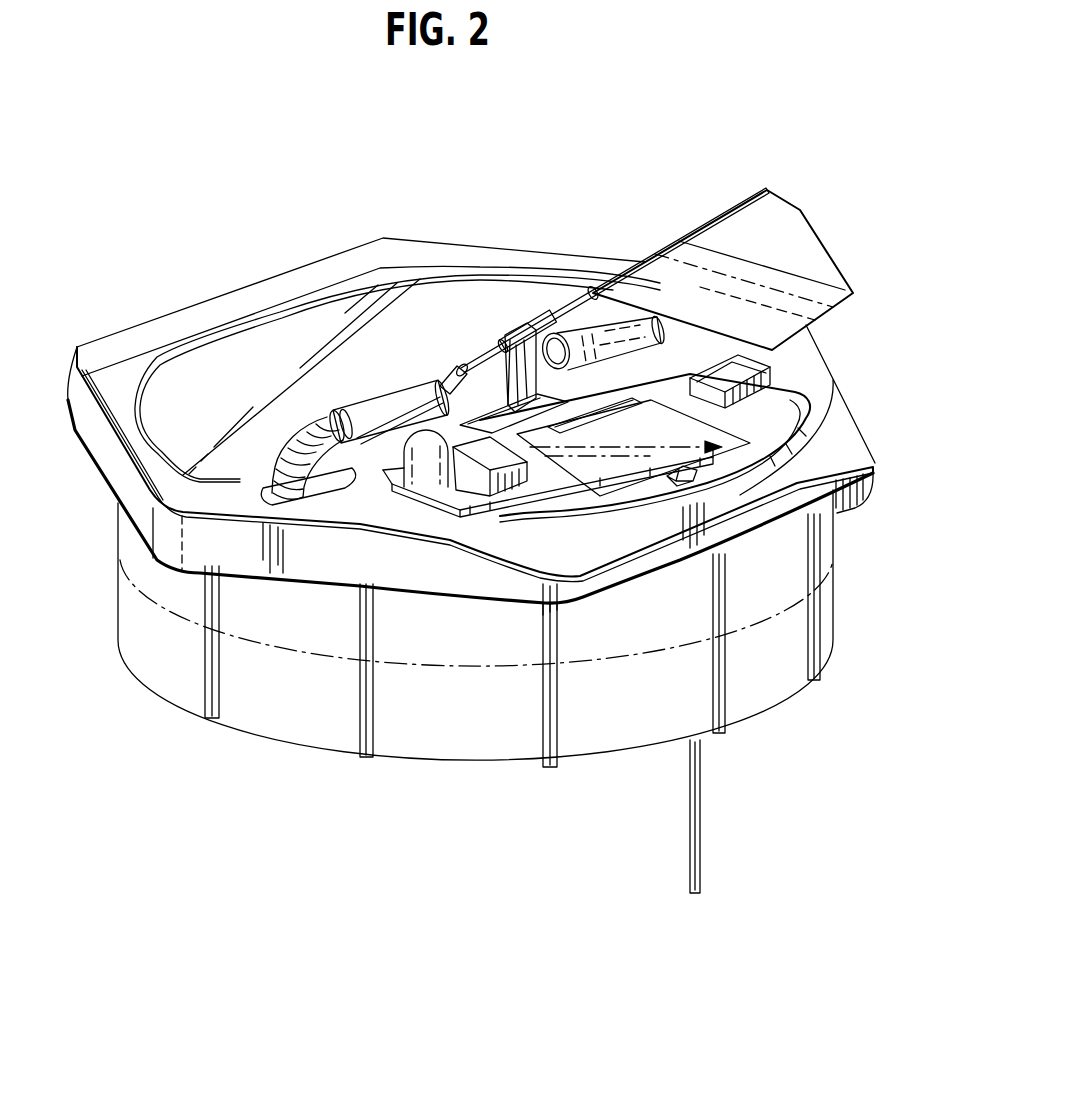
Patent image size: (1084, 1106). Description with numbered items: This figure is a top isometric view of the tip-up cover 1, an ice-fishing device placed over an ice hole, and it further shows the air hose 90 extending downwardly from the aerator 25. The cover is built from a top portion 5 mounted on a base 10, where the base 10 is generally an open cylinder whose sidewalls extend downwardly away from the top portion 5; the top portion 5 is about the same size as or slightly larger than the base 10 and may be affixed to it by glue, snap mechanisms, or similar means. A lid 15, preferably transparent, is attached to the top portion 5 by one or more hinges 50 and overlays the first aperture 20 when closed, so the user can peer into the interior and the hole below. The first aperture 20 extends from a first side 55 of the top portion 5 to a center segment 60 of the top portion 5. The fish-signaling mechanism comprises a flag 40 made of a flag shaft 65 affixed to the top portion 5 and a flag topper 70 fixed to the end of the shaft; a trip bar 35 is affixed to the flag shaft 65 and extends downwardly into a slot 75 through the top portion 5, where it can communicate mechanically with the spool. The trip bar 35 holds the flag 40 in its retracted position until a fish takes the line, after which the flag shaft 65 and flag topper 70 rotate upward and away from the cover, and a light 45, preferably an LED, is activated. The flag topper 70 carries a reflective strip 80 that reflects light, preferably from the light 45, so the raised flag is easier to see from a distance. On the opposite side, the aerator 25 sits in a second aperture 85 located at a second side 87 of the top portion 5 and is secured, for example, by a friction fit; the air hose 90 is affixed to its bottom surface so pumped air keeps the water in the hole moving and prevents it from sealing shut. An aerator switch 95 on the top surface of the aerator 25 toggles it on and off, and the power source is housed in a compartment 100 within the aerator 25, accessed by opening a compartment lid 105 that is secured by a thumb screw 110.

The tip-up cover 1 is at (75, 317).
The top portion 5 is at (77, 420).
The base 10 is at (118, 570).
The lid 15 is at (383, 243).
The first aperture 20 is at (397, 322).
The aerator 25 is at (822, 424).
The trip bar 35 is at (497, 344).
The flag 40 is at (757, 230).
The light 45 is at (400, 480).
The hinges 50 is at (353, 412).
The first side 55 is at (150, 338).
The center segment 60 is at (333, 440).
The flag shaft 65 is at (567, 298).
The flag topper 70 is at (805, 243).
The slot 75 is at (497, 420).
The reflective strip 80 is at (822, 262).
The second aperture 85 is at (758, 427).
The second side 87 is at (832, 507).
The air hose 90 is at (700, 835).
The aerator switch 95 is at (770, 377).
The compartment 100 is at (812, 450).
The compartment lid 105 is at (620, 475).
The thumb screw 110 is at (683, 478).